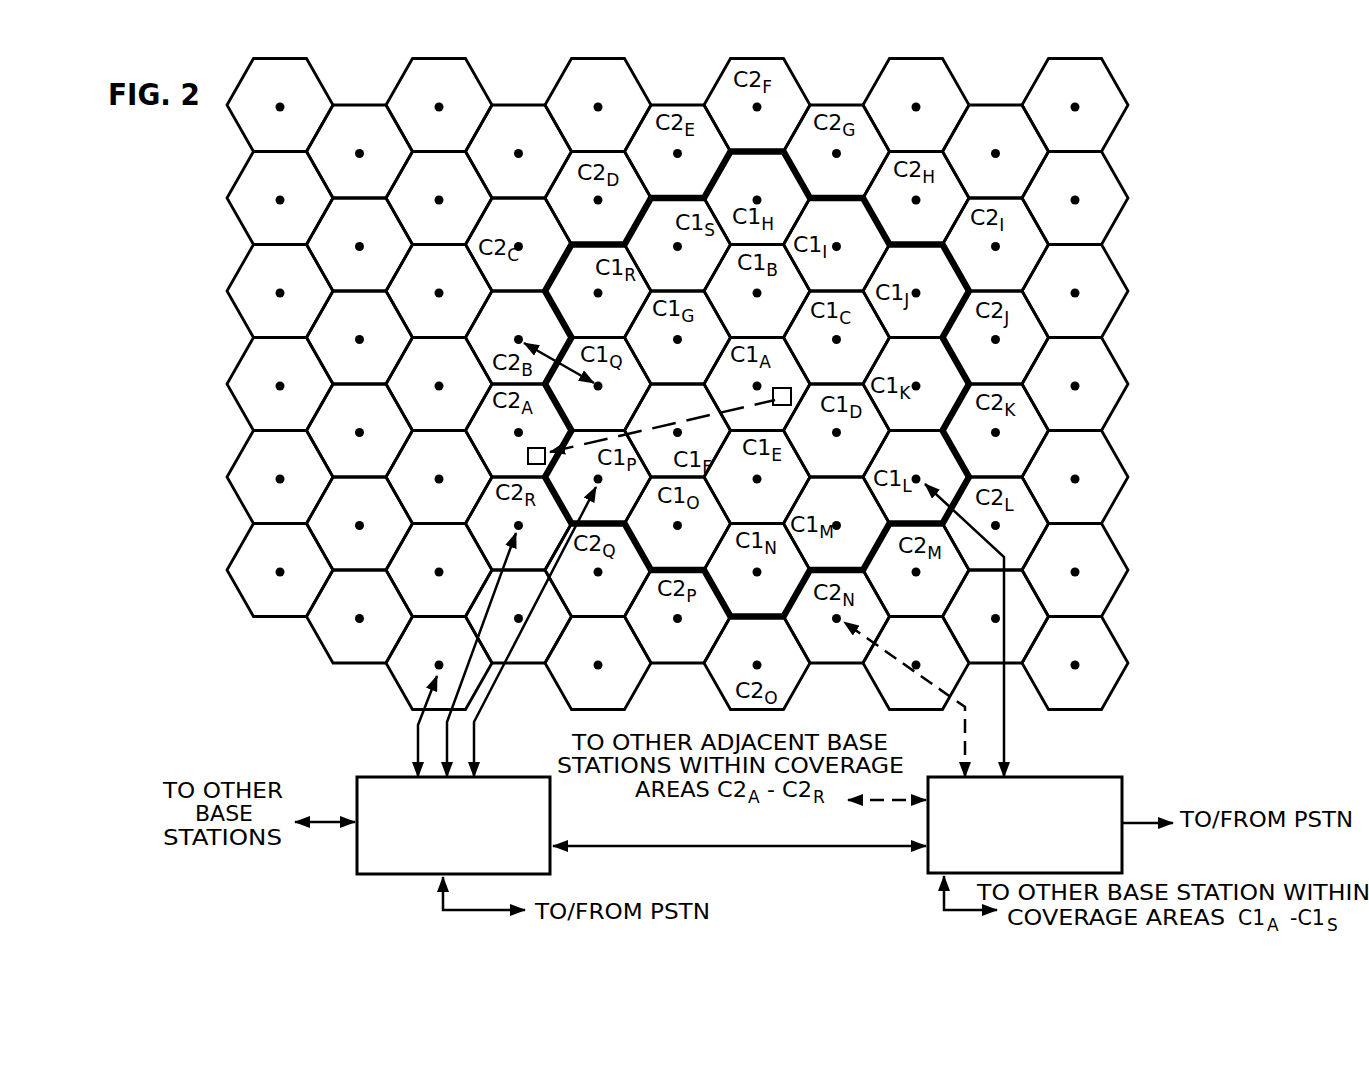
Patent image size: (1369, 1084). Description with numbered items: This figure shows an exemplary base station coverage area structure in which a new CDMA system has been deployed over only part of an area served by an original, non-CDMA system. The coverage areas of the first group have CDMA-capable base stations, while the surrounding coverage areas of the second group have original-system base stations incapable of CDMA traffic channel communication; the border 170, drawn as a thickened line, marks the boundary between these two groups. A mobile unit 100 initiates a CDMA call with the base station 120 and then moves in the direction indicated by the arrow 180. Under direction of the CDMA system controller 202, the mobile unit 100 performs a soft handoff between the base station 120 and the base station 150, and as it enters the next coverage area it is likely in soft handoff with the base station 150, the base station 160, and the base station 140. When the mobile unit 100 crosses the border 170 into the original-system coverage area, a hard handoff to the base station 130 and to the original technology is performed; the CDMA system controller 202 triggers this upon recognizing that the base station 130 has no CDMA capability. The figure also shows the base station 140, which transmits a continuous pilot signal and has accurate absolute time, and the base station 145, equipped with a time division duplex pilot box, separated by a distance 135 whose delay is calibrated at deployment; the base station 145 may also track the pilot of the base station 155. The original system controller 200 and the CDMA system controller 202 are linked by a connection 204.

The mobile unit 100 is at (527, 457).
The base station 120 is at (761, 384).
The base station 130 is at (519, 430).
The distance 135 is at (560, 366).
The base station 140 is at (600, 386).
The base station 145 is at (519, 338).
The base station 150 is at (679, 434).
The base station 155 is at (600, 293).
The base station 160 is at (599, 480).
The border 170 is at (742, 618).
The arrow 180 is at (655, 429).
The original system controller 200 is at (490, 777).
The CDMA system controller 202 is at (1052, 777).
The link between system controllers 204 is at (728, 845).